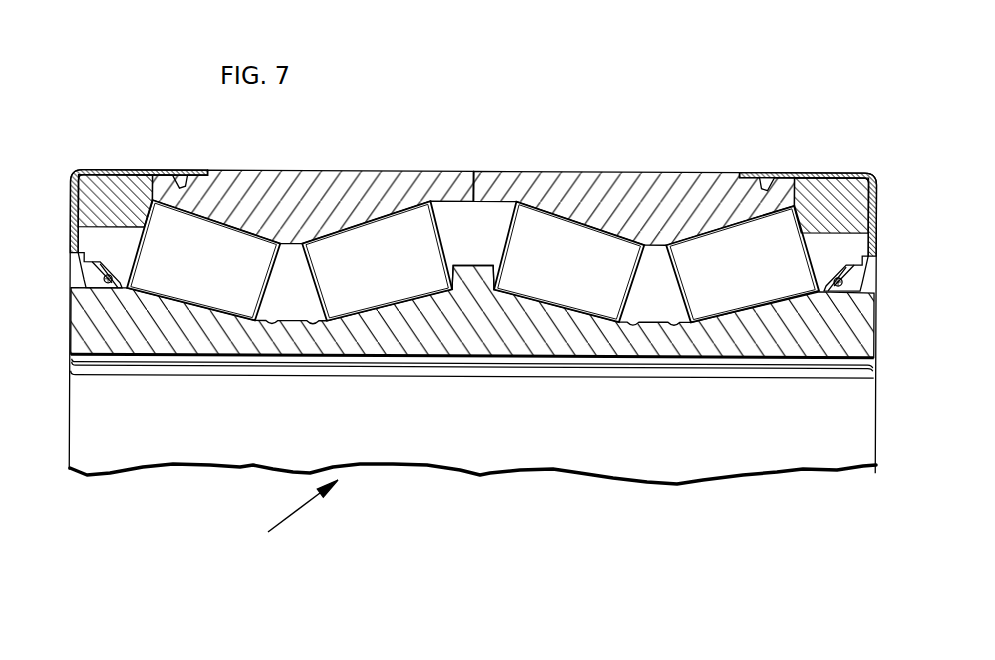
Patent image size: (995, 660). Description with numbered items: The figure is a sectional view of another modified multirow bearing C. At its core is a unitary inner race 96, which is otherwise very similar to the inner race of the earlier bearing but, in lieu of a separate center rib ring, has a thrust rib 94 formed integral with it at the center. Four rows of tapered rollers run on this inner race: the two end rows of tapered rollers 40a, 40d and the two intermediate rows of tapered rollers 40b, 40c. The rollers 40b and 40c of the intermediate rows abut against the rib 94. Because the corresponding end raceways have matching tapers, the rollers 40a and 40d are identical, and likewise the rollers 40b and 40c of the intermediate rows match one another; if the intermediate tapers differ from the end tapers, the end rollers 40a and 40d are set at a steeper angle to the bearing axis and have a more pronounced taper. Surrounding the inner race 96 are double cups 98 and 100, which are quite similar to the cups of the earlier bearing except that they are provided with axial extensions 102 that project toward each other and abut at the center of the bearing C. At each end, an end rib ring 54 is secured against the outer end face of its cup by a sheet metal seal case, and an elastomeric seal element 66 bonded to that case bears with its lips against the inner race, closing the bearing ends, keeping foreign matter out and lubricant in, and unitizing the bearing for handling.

The end rib ring 54 is at (114, 182).
The elastomeric seal element 66 is at (72, 272).
The thrust rib 94 is at (473, 287).
The unitary inner race 96 is at (392, 342).
The double cup 98 is at (338, 180).
The double cup 100 is at (623, 195).
The axial extension 102 is at (483, 180).
The tapered rollers 40a is at (222, 278).
The tapered rollers 40b is at (396, 278).
The tapered rollers 40c is at (589, 278).
The tapered rollers 40d is at (758, 276).
The modified multirow bearing C is at (290, 514).